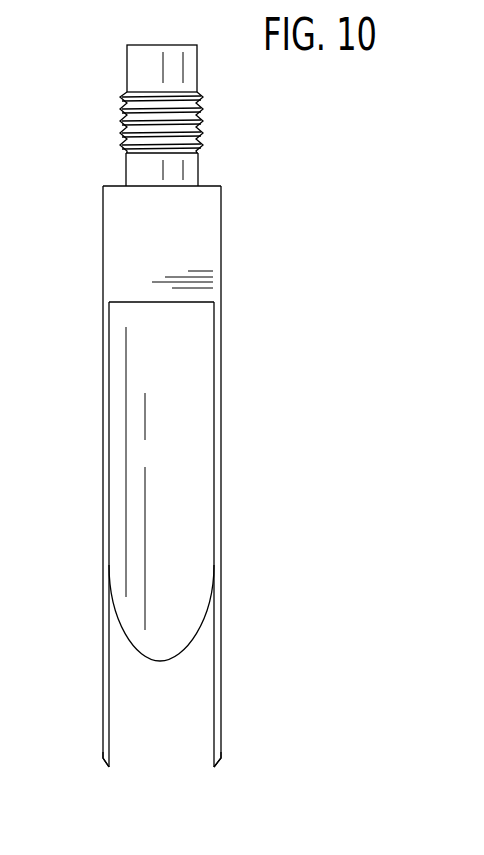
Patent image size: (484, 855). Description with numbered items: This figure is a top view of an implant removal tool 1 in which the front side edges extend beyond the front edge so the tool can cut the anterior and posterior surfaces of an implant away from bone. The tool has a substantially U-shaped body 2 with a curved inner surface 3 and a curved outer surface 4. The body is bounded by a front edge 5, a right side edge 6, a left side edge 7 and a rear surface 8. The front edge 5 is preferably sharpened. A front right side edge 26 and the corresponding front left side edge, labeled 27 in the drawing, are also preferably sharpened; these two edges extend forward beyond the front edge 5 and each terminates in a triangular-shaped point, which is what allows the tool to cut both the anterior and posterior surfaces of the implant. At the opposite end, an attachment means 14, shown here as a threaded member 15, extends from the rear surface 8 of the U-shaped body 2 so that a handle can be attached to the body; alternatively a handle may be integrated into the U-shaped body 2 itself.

The implant removal tool 1 is at (252, 190).
The substantially U-shaped body 2 is at (221, 500).
The curved inner surface 3 is at (157, 458).
The curved outer surface 4 is at (221, 440).
The front edge 5 is at (160, 661).
The right side edge 6 is at (221, 372).
The left side edge 7 is at (103, 372).
The rear surface 8 is at (118, 187).
The attachment means 14 is at (120, 122).
The threaded member 15 is at (161, 122).
The front right side edge 26 is at (222, 762).
The left bottom edge 27 is at (102, 762).